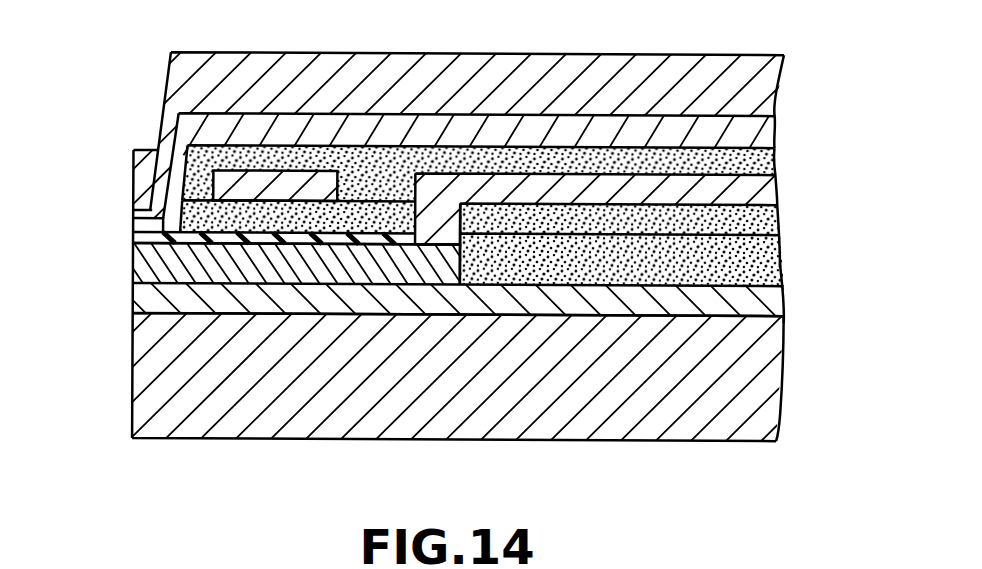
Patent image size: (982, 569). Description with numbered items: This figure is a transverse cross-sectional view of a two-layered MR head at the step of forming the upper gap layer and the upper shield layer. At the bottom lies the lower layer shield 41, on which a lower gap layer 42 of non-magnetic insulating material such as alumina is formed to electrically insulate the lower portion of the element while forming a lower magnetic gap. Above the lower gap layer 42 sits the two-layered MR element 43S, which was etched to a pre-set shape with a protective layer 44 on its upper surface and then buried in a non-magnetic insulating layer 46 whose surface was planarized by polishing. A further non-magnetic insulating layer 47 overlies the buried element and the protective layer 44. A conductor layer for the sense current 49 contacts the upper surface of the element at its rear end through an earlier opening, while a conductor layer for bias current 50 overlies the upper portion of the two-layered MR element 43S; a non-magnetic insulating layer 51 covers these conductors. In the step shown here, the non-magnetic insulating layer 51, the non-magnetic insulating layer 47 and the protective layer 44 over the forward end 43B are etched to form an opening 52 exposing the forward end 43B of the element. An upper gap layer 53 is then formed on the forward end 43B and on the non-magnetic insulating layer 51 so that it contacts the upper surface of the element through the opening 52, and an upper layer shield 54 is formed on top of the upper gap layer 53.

The lower layer shield 41 is at (758, 372).
The lower gap layer 42 is at (748, 300).
The two-layered MR element 43S is at (157, 267).
The forward end of the two-layered MR element 43B is at (133, 218).
The protective layer 44 is at (280, 232).
The non-magnetic insulating layer 46 is at (748, 263).
The non-magnetic insulating layer 47 is at (750, 224).
The conductor layer for the sense current 49 is at (657, 185).
The conductor layer for bias current 50 is at (322, 170).
The non-magnetic insulating layer 51 is at (557, 152).
The opening 52 is at (157, 200).
The upper gap layer 53 is at (178, 118).
The upper layer shield 54 is at (200, 72).